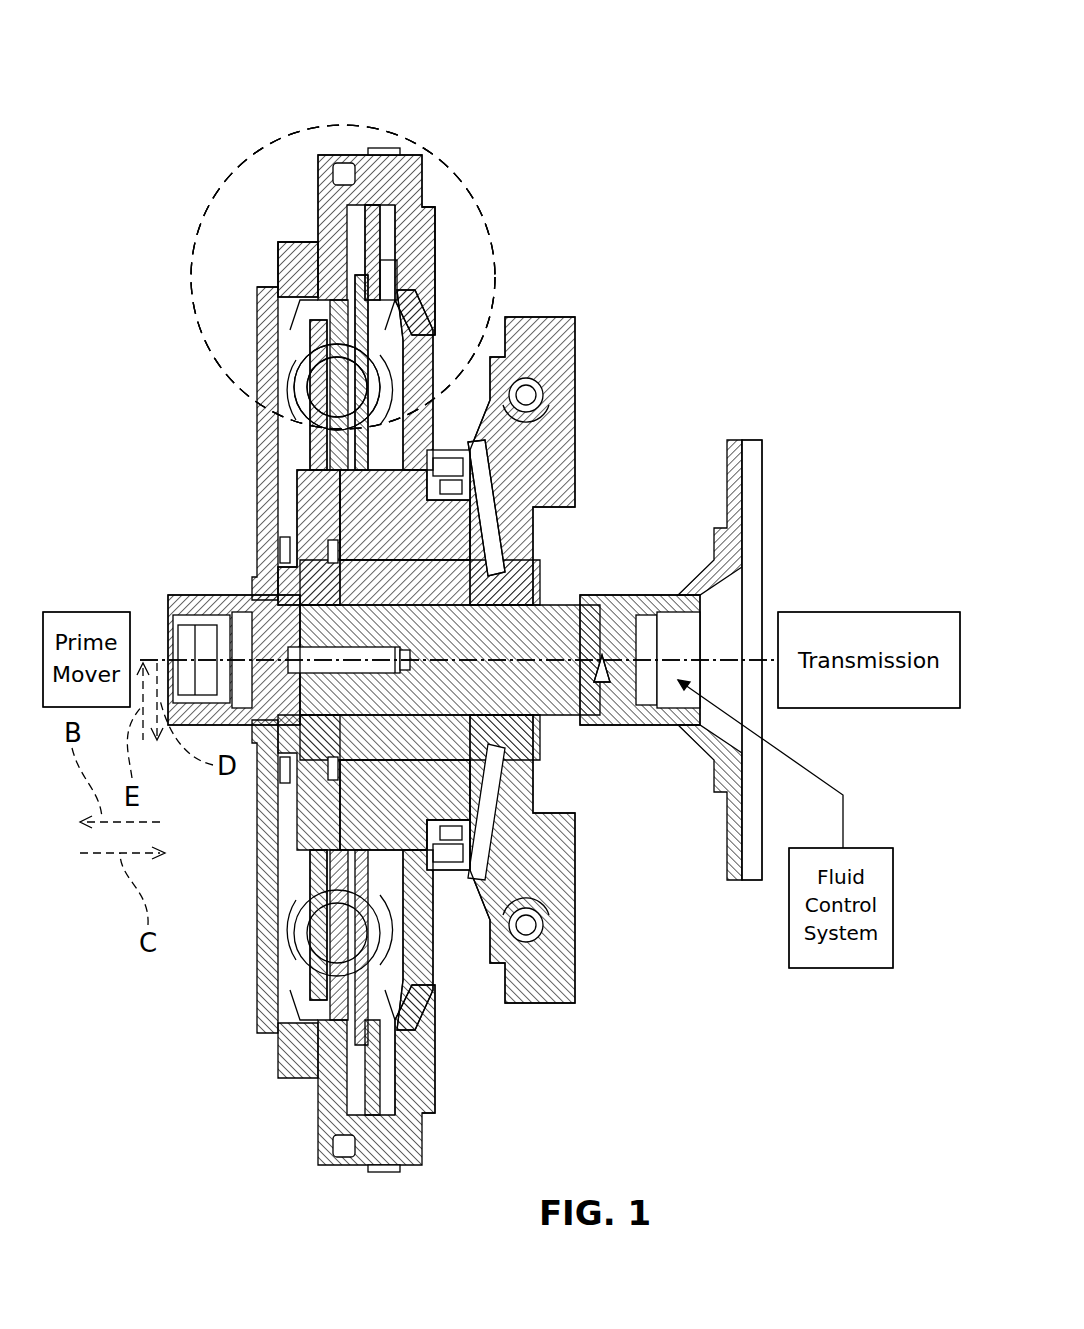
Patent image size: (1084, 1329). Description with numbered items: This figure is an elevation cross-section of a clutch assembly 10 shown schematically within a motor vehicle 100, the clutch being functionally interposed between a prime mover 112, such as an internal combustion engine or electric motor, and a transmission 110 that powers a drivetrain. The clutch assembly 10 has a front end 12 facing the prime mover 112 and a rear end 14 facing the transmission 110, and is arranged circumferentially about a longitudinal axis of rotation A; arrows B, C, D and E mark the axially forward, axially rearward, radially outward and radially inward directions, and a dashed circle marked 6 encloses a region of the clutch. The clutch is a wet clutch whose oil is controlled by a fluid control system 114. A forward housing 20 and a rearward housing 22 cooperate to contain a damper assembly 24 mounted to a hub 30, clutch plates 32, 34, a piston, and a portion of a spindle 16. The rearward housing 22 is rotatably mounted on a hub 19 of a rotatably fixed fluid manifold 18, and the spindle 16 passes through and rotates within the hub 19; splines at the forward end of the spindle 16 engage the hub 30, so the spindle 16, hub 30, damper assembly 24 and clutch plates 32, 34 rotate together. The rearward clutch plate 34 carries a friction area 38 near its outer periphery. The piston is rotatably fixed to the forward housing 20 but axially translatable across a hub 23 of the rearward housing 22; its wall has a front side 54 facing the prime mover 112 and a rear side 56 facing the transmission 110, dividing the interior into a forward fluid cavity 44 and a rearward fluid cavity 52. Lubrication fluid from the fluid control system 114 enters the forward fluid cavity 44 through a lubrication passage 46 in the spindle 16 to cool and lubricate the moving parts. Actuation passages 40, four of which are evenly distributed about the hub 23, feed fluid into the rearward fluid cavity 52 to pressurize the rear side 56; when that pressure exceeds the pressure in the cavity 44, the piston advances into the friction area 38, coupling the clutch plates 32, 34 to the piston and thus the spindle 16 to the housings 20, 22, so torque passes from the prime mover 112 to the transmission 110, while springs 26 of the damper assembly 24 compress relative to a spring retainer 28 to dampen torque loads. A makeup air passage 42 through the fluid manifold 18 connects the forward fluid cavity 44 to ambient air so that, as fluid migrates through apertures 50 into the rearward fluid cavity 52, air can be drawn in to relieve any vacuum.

The clutch assembly 10 is at (256, 118).
The detail view circle 6 is at (463, 173).
The motor vehicle 100 is at (752, 248).
The front end 12 is at (172, 588).
The rear end 14 is at (777, 513).
The spindle 16 is at (622, 603).
The fluid manifold 18 is at (572, 408).
The hub 19 is at (575, 810).
The forward housing 20 is at (270, 265).
The rearward housing 22 is at (415, 258).
The hub 23 is at (450, 820).
The damper assembly 24 is at (287, 367).
The springs 26 is at (305, 392).
The spring retainer 28 is at (295, 418).
The hub 30 is at (320, 880).
The clutch plate 32 is at (278, 283).
The rearward clutch plate 34 is at (393, 290).
The friction area 38 is at (380, 240).
The actuation passages 40 is at (350, 537).
The makeup air passage 42 is at (488, 485).
The forward fluid cavity 44 is at (297, 473).
The lubrication passage 46 is at (615, 668).
The apertures 50 is at (370, 267).
The rearward fluid cavity 52 is at (420, 330).
The front side 54 is at (397, 972).
The rear side 56 is at (422, 1022).
The transmission 110 is at (903, 712).
The prime mover 112 is at (107, 612).
The fluid control system 114 is at (832, 970).